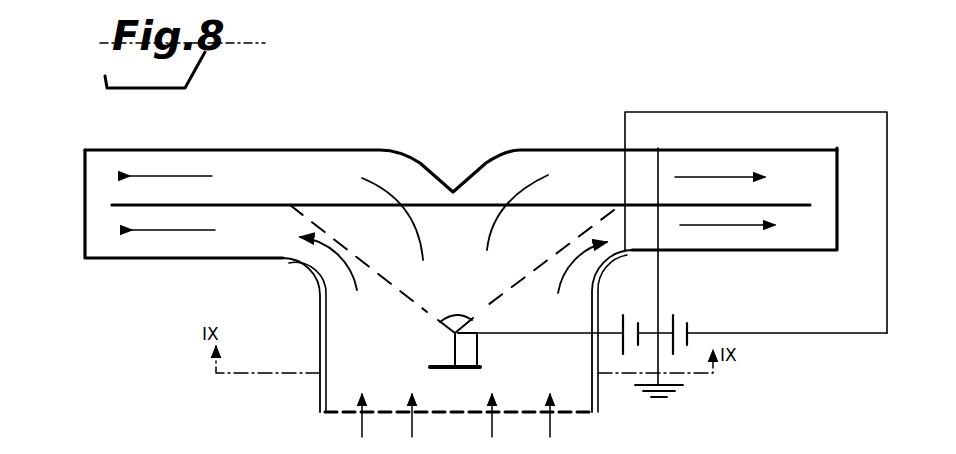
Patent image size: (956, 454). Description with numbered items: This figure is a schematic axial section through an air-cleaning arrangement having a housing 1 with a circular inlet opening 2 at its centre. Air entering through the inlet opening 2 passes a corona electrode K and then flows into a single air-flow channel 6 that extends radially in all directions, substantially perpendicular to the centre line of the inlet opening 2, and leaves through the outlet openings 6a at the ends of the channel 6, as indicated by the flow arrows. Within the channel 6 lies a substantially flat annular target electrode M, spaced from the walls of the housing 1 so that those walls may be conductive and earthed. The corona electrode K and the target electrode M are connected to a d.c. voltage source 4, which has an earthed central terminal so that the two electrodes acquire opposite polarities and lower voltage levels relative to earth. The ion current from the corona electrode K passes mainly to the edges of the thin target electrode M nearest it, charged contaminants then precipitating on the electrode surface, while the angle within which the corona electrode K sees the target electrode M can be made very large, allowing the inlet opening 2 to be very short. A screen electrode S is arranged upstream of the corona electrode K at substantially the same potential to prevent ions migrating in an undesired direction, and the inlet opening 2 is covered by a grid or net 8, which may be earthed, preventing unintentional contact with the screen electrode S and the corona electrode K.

The housing 1 is at (803, 251).
The inlet opening 2 is at (350, 402).
The d.c. voltage source 4 is at (627, 321).
The air-flow channel 6 is at (146, 160).
The outlet opening 6a is at (85, 187).
The grid or net 8 is at (455, 418).
The corona electrode K is at (452, 338).
The screen electrode S is at (479, 369).
The target electrode M is at (313, 203).